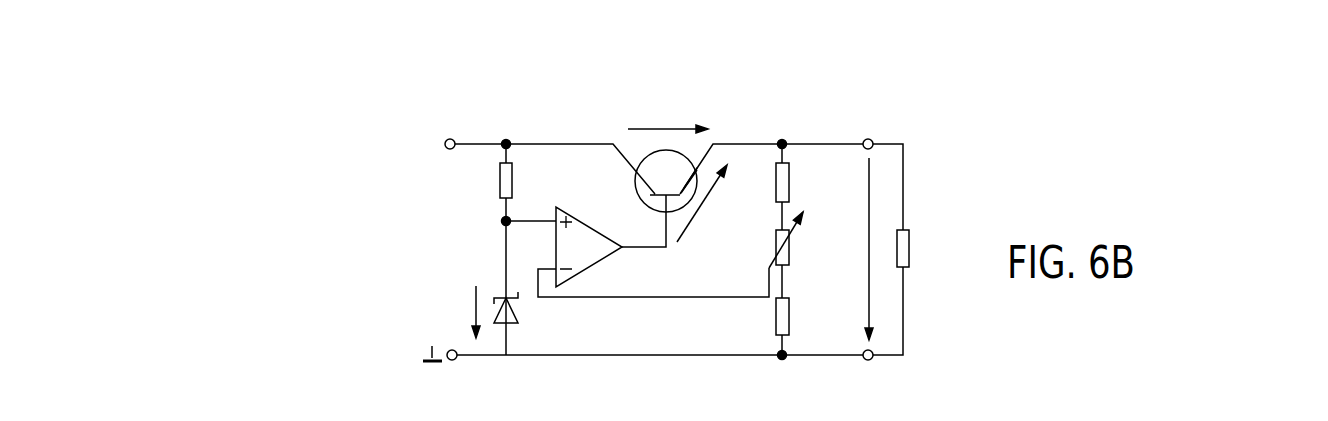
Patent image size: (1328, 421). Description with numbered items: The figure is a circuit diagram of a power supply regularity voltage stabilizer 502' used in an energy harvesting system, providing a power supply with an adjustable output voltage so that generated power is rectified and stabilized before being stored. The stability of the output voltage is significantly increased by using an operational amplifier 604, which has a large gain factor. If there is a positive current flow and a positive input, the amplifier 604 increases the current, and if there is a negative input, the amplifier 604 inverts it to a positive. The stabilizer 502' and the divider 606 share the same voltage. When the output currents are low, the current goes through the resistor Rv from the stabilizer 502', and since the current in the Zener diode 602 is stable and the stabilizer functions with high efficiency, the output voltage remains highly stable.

The voltage stabilizer 502' is at (770, 218).
The Zener diode 602 is at (555, 322).
The operational amplifier 604 is at (580, 185).
The divider 606 is at (872, 110).